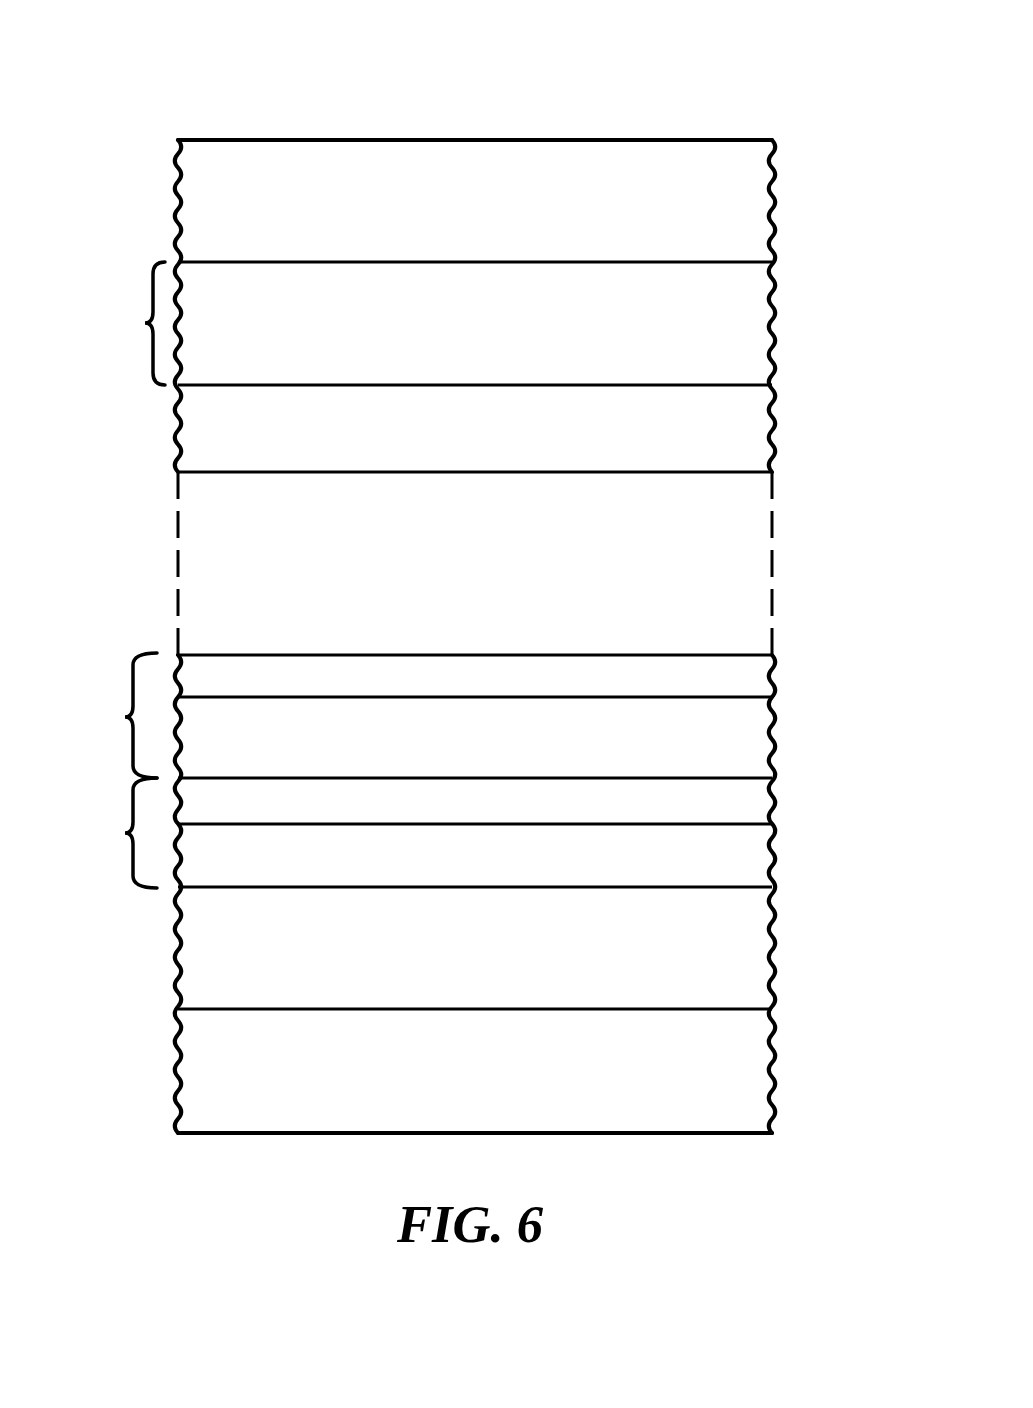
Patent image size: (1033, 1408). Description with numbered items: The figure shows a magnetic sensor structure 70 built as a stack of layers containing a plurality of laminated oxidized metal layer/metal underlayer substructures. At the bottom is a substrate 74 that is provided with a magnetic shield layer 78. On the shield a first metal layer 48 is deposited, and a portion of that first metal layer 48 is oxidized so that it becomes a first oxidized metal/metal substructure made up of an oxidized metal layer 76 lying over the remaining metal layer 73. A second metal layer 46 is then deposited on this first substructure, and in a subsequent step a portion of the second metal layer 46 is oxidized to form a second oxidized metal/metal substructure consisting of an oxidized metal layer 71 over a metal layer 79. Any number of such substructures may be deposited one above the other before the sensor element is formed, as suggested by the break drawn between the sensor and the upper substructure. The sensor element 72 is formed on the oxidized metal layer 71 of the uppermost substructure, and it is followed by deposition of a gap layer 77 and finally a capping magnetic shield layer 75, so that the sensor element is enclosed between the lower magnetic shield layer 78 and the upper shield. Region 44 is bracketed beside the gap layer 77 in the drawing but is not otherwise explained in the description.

The magnetic sensor structure 70 is at (122, 104).
The capping magnetic shield layer 75 is at (776, 205).
The gap layer 77 is at (776, 335).
The sensor element 72 is at (776, 425).
The oxidized metal layer 71 is at (776, 660).
The metal layer 79 is at (776, 733).
The oxidized metal layer 76 is at (776, 805).
The metal layer 73 is at (776, 862).
The magnetic shield layer 78 is at (776, 955).
The substrate 74 is at (772, 1072).
The gap layer region 44 is at (145, 328).
The second metal layer 46 is at (125, 717).
The first metal layer 48 is at (125, 833).